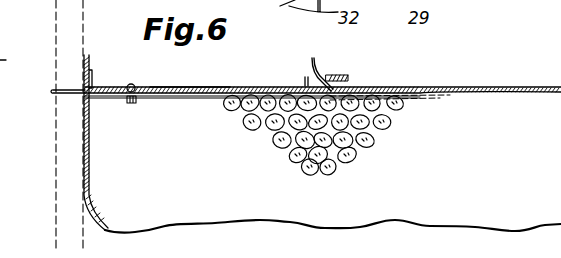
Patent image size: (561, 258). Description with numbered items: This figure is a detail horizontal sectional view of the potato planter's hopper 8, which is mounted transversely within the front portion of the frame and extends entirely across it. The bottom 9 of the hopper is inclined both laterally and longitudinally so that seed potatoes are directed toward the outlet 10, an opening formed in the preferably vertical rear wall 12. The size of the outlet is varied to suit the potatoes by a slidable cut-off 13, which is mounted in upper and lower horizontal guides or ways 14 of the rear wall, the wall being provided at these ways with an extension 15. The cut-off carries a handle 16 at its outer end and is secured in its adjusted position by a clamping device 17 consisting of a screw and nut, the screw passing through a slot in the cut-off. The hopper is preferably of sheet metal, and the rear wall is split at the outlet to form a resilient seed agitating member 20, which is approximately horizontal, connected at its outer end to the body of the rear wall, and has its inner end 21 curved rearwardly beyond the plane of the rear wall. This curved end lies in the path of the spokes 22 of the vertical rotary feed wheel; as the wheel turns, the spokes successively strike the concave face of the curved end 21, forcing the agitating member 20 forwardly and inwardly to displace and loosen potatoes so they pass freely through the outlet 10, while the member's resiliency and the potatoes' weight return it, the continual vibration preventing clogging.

The hopper 8 is at (83, 178).
The bottom 9 is at (421, 164).
The outlet 10 is at (280, 96).
The rear wall 12 is at (495, 88).
The slidable cut-off 13 is at (178, 88).
The guides or ways 14 is at (163, 99).
The extension 15 is at (114, 90).
The handle 16 is at (67, 98).
The clamping device 17 is at (171, 35).
The resilient seed agitating member 20 is at (392, 86).
The inner end 21 is at (317, 63).
The spokes 22 is at (342, 78).